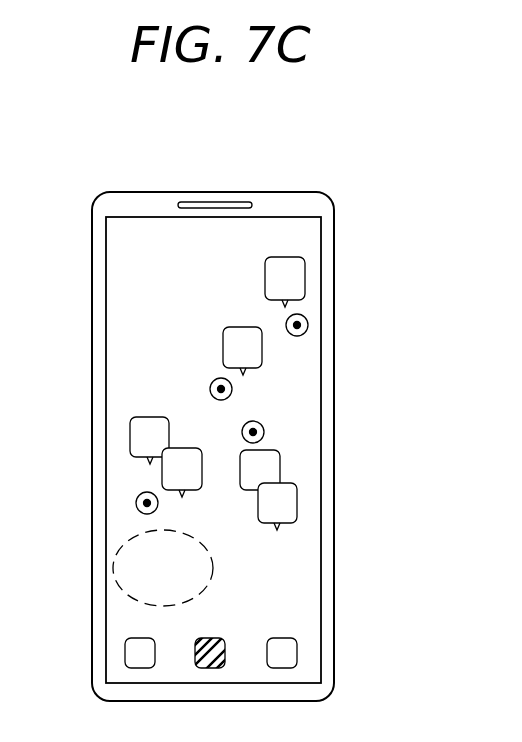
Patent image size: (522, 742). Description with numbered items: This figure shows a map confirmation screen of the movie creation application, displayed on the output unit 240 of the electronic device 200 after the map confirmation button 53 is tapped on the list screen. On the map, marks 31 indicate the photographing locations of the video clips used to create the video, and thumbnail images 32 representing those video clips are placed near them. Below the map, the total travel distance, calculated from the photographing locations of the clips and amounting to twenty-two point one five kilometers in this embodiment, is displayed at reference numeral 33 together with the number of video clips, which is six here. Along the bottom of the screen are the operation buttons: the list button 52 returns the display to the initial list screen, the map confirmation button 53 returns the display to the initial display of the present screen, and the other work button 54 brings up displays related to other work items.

The electronic device 200 is at (287, 193).
The output unit 240 is at (317, 250).
The marks 31 is at (158, 500).
The thumbnail images 32 is at (275, 285).
The total travel distance display 33 is at (122, 568).
The list button 52 is at (141, 650).
The map confirmation button 53 is at (223, 643).
The other work button 54 is at (297, 653).